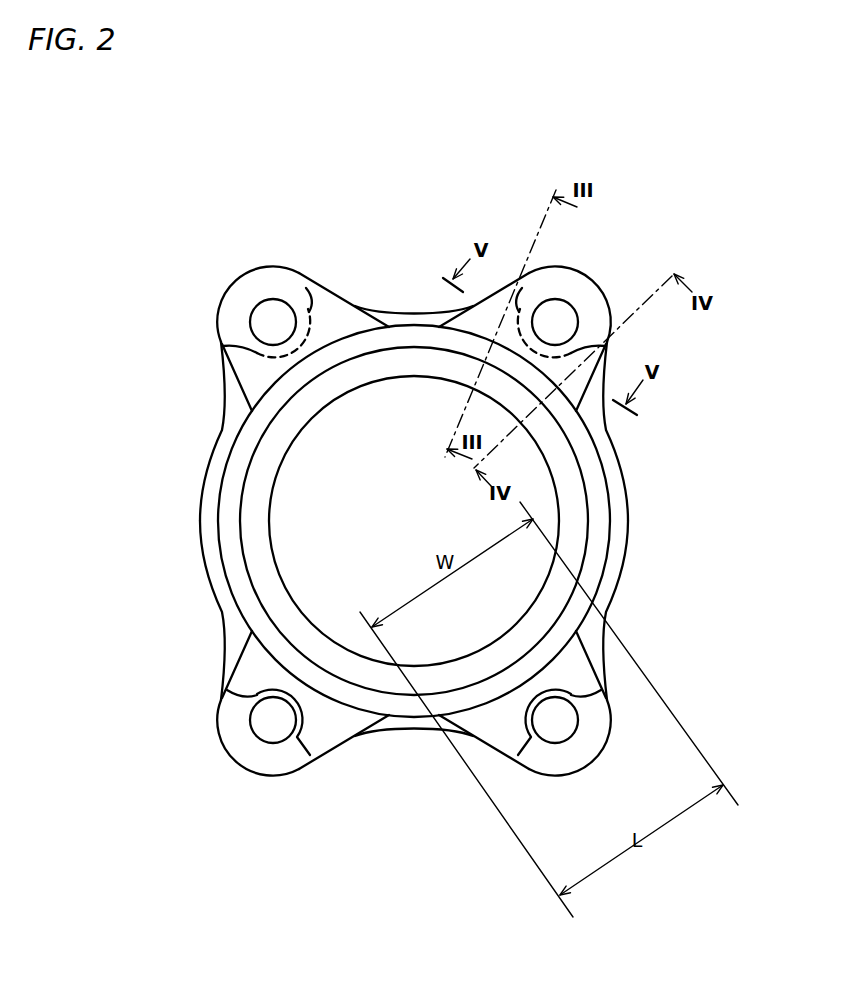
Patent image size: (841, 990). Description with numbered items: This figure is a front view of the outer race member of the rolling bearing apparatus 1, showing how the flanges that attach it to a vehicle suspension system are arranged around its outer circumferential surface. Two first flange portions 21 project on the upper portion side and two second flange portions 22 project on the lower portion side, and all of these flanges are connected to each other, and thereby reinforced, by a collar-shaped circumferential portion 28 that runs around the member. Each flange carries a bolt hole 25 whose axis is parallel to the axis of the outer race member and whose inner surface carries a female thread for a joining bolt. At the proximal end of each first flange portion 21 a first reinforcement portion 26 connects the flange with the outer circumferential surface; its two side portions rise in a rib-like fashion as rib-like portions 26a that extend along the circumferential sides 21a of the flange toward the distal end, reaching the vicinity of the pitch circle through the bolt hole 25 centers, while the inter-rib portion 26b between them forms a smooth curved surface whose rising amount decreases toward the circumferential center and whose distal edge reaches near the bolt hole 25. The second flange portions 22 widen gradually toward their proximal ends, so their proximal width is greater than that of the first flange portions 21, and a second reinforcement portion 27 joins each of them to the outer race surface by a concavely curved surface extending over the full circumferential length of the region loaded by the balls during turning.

The rolling bearing apparatus 1 is at (196, 208).
The first flange portion 21 is at (238, 302).
The circumferential side of the first flange portion 21a is at (302, 272).
The second flange portion 22 is at (220, 742).
The bolt hole 25 is at (267, 310).
The first reinforcement portion 26 is at (333, 322).
The rib-like portion 26a is at (355, 318).
The inter-rib portion 26b is at (547, 300).
The second reinforcement portion 27 is at (243, 668).
The collar-shaped circumferential portion 28 is at (410, 312).